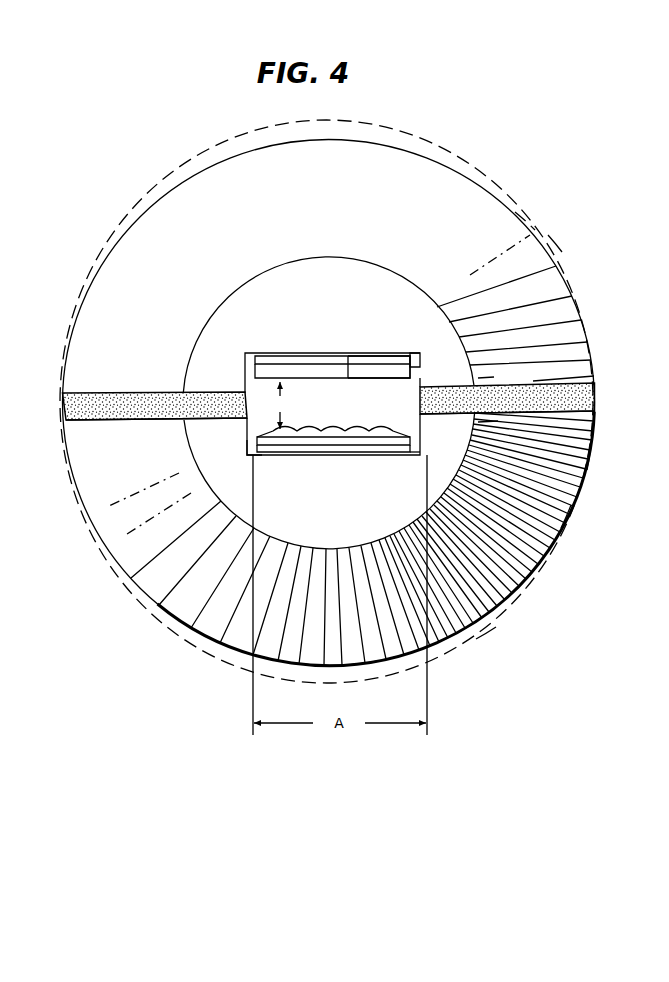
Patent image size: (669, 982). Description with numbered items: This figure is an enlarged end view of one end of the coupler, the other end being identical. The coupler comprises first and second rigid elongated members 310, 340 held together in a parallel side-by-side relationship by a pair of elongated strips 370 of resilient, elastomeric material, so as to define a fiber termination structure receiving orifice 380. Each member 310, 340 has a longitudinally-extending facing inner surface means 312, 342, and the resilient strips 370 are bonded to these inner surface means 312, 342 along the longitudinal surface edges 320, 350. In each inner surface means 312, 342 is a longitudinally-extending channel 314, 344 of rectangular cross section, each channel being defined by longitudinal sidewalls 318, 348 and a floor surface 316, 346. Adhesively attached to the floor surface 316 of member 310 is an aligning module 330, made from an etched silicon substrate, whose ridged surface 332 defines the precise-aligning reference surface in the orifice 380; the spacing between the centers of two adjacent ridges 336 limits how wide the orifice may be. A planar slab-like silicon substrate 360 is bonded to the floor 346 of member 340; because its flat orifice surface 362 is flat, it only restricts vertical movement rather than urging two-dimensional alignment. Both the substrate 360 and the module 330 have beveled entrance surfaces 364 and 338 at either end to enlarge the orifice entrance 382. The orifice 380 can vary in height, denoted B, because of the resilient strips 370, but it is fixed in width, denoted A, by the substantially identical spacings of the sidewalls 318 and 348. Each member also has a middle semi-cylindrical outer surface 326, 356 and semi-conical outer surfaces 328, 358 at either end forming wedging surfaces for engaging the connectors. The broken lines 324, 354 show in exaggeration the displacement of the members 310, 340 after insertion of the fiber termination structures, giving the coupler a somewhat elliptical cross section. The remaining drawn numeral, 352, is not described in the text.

The first rigid elongated member 310 is at (546, 563).
The inner surface means 312 is at (489, 422).
The channel 314 is at (256, 456).
The floor surface 316 is at (323, 454).
The longitudinal sidewalls 318 is at (418, 428).
The longitudinal surface edge 320 is at (545, 416).
The broken line 324 is at (489, 633).
The middle semi-cylindrical outer surface 326 is at (592, 464).
The semi-conical outer surface 328 is at (562, 518).
The aligning module 330 is at (418, 448).
The ridged surface 332 is at (340, 431).
The ridges 336 is at (380, 431).
The beveled entrance surface 338 is at (375, 454).
The second rigid elongated member 340 is at (574, 284).
The inner surface means 342 is at (488, 372).
The channel 344 is at (262, 352).
The floor surface 346 is at (301, 354).
The longitudinal sidewalls 348 is at (246, 377).
The longitudinal surface edge 350 is at (536, 374).
The outer ring 352 is at (476, 177).
The broken line 354 is at (427, 139).
The middle semi-cylindrical outer surface 356 is at (556, 245).
The semi-conical outer surface 358 is at (524, 210).
The planar slab-like silicon substrate 360 is at (420, 360).
The flat orifice surface 362 is at (346, 379).
The beveled entrance surface 364 is at (391, 356).
The elongated strips 370 is at (595, 399).
The orifice 380 is at (296, 399).
The orifice entrance 382 is at (244, 455).